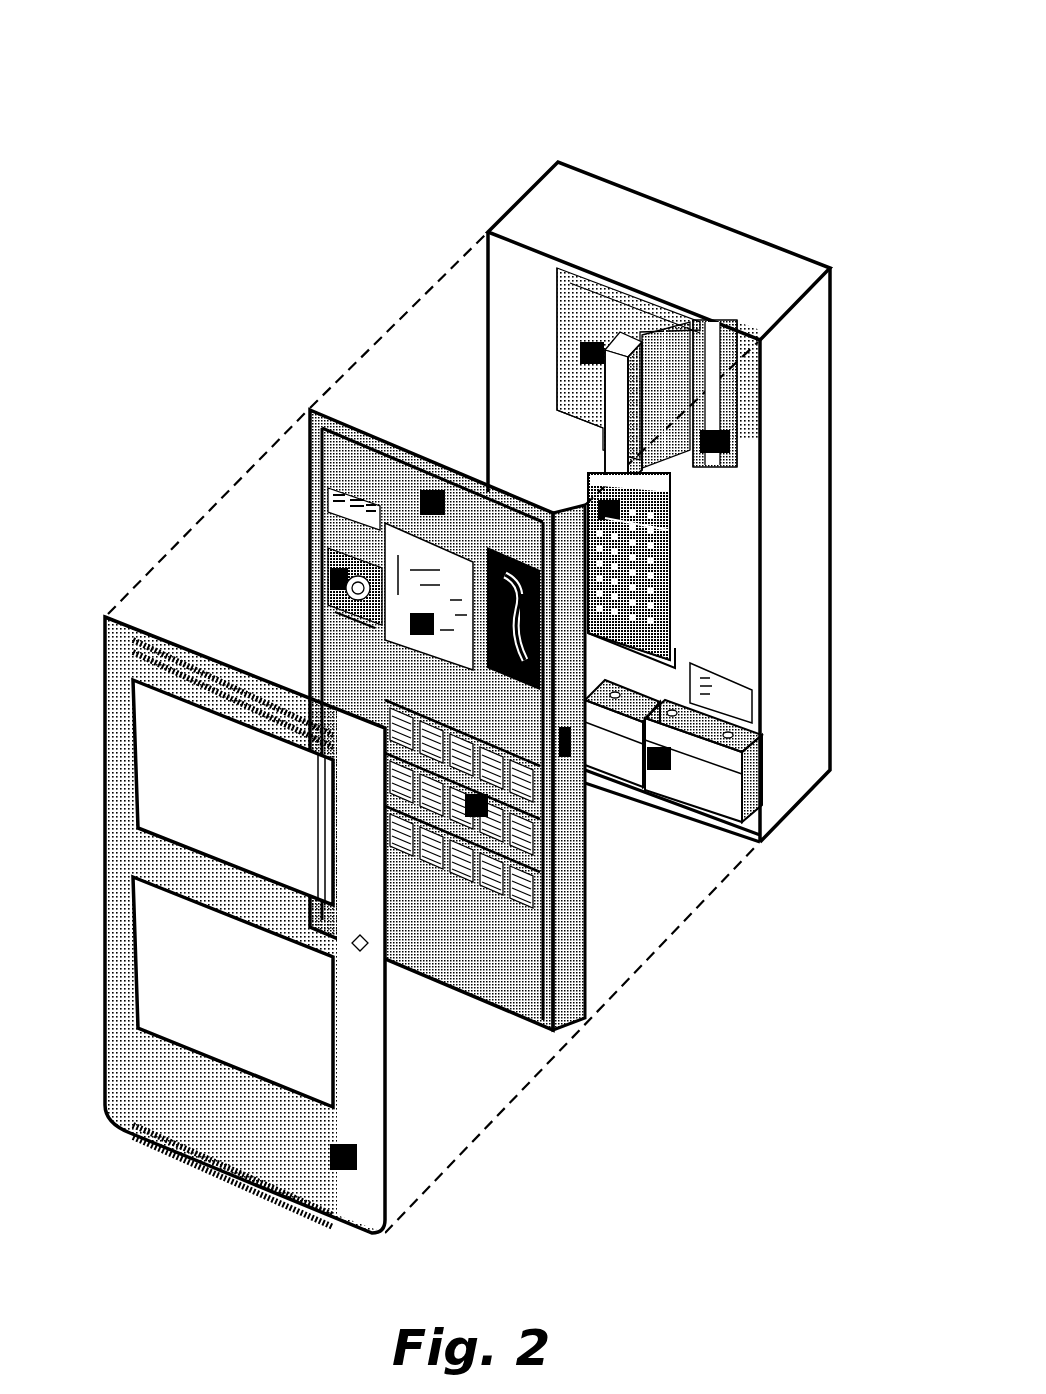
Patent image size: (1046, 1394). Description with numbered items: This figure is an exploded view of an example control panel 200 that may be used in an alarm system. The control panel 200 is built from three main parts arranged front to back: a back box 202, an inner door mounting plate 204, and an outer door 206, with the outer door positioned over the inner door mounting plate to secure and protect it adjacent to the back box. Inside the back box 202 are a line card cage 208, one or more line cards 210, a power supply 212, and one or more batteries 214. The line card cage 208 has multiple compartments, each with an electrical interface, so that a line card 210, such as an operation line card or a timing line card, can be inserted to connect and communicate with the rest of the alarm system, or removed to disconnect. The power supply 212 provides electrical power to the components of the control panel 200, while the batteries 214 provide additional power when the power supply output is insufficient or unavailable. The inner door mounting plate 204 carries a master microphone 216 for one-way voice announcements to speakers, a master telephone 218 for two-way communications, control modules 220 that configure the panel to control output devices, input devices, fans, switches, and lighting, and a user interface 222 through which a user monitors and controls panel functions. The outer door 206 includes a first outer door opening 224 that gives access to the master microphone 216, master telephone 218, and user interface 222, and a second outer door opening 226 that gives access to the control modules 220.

The control panel 200 is at (139, 70).
The back box 202 is at (522, 190).
The inner door mounting plate 204 is at (310, 408).
The outer door 206 is at (108, 616).
The line card cage 208 is at (722, 443).
The line card 210 is at (583, 345).
The power supply 212 is at (660, 548).
The batteries 214 is at (660, 766).
The master microphone 216 is at (330, 567).
The master telephone 218 is at (536, 598).
The control modules 220 is at (486, 818).
The user interface 222 is at (432, 632).
The first outer door opening 224 is at (177, 765).
The second outer door opening 226 is at (177, 975).